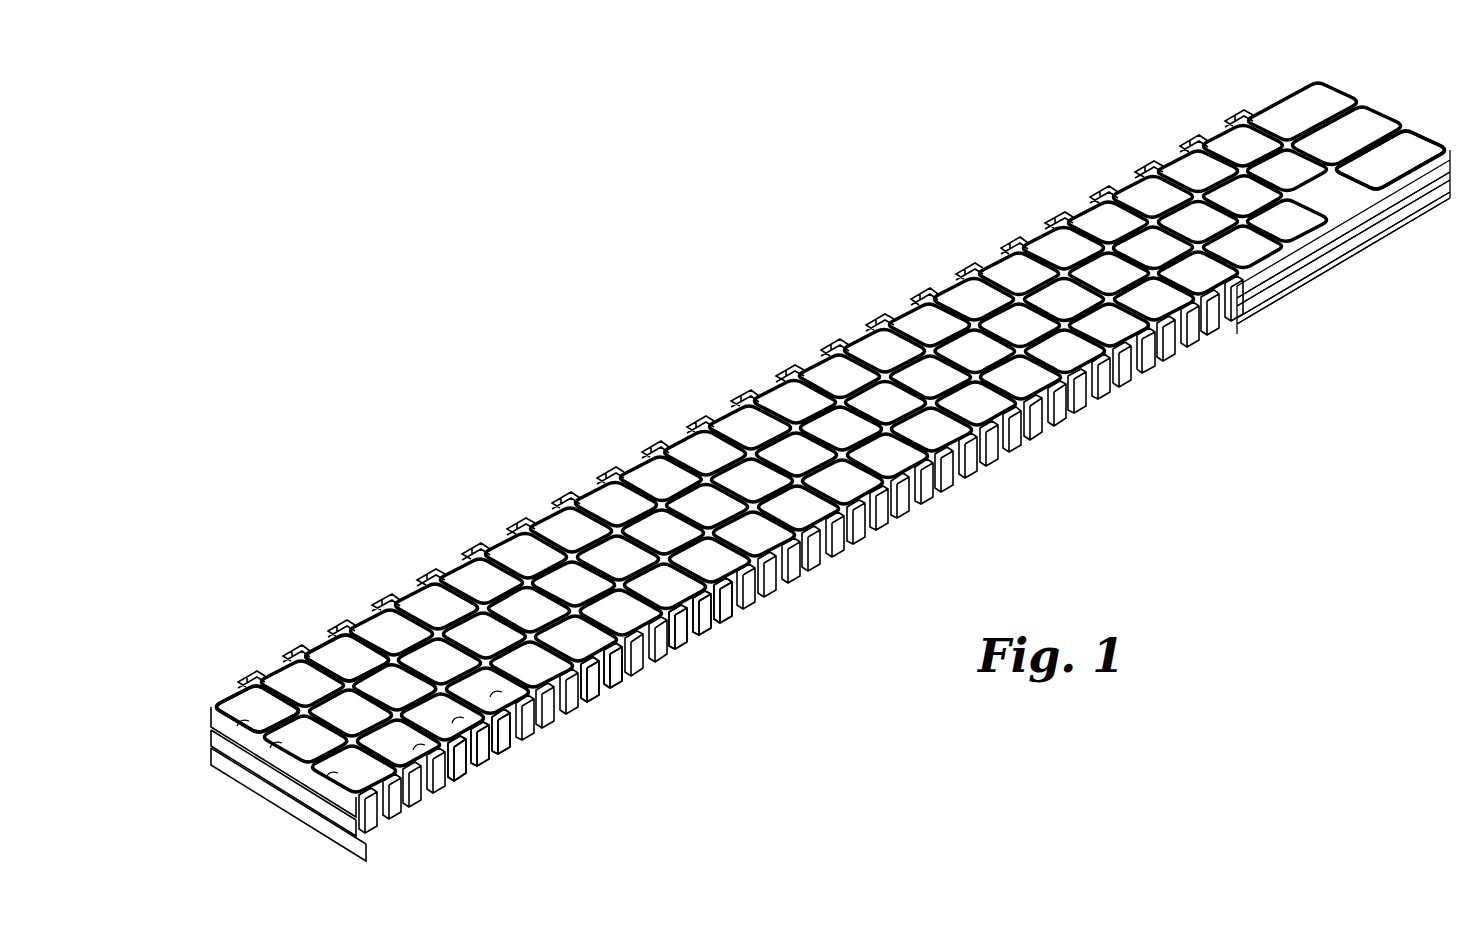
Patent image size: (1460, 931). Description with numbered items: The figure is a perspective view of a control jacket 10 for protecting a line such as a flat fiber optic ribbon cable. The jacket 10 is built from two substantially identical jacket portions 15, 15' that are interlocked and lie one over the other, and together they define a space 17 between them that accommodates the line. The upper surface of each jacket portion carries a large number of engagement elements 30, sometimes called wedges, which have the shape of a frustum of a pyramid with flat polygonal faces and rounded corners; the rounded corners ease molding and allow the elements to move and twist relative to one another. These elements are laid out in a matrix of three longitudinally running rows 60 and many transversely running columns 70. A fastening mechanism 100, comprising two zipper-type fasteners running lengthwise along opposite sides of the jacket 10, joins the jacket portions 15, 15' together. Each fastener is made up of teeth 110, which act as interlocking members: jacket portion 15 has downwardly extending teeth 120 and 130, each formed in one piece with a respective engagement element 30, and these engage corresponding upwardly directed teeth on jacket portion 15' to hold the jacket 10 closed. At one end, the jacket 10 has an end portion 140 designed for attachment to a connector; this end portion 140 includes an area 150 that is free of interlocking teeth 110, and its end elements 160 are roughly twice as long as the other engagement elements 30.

The jacket 10 is at (503, 460).
The jacket portion 15 is at (255, 677).
The jacket portion 15' is at (242, 771).
The space 17 is at (325, 805).
The engagement elements 30 is at (343, 662).
The rows 60 is at (333, 775).
The columns 70 is at (498, 696).
The fastening mechanism 100 is at (605, 706).
The teeth 110 is at (630, 674).
The downwardly extending teeth 120 is at (713, 642).
The downwardly extending teeth 130 is at (738, 602).
The end portion 140 is at (1135, 115).
The area 150 is at (1270, 297).
The end elements 160 is at (1422, 148).